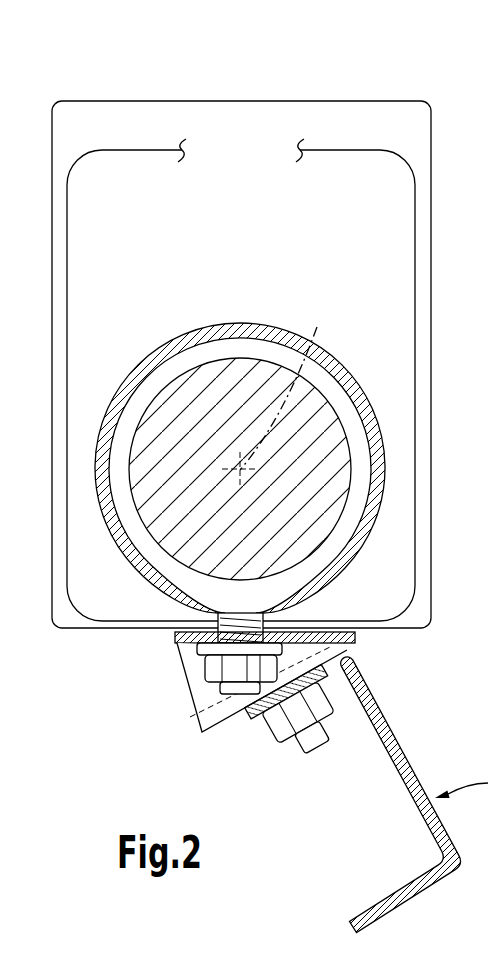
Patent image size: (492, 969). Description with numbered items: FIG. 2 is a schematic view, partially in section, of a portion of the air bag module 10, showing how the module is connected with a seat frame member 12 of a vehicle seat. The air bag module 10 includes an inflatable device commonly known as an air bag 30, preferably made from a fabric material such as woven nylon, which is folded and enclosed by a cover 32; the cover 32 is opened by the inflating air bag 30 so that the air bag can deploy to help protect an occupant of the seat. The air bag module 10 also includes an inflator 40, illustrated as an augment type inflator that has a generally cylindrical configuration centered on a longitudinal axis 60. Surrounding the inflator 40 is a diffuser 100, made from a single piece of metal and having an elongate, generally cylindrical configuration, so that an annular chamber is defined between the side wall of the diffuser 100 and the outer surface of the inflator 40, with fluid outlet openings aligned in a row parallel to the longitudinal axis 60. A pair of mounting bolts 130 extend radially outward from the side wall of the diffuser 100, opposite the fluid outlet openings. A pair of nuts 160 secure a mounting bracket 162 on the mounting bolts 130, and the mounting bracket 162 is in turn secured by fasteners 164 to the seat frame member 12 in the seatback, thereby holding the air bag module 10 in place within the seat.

The air bag module 10 is at (241, 428).
The cover 32 is at (127, 71).
The air bag 30 is at (132, 152).
The diffuser 100 is at (133, 355).
The inflator 40 is at (239, 338).
The longitudinal axis 60 is at (318, 328).
The mounting bolts 130 is at (263, 628).
The mounting bracket 162 is at (177, 656).
The nuts 160 is at (208, 668).
The fasteners 164 is at (267, 737).
The seat frame member 12 is at (390, 723).